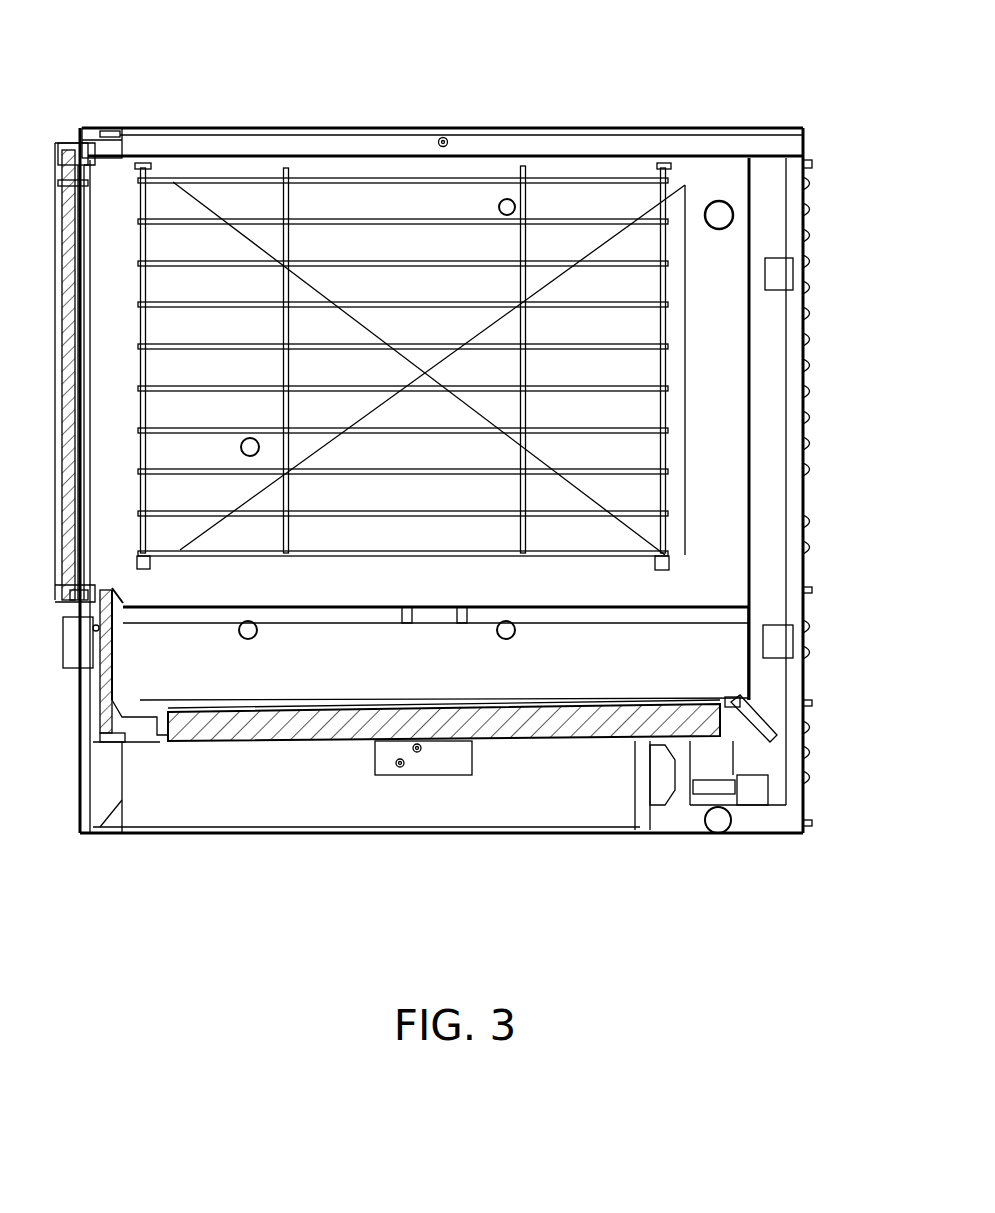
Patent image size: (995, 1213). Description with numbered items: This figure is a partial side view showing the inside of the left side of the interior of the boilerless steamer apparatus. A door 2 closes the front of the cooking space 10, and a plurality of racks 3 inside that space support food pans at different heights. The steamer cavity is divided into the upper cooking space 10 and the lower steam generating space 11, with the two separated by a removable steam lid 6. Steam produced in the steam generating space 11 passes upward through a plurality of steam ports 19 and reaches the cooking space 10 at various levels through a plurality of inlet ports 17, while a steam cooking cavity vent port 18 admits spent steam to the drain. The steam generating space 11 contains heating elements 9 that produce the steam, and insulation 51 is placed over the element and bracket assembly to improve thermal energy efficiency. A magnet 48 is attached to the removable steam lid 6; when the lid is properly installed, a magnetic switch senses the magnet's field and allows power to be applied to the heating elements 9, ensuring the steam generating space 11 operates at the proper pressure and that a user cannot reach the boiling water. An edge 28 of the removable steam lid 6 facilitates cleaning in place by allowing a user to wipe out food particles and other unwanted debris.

The door 2 is at (53, 243).
The rack 3 is at (557, 180).
The removable steam lid 6 is at (553, 617).
The heating element 9 is at (770, 740).
The cooking space 10 is at (725, 565).
The steam generating space 11 is at (717, 663).
The inlet port 17 is at (250, 437).
The steam cooking cavity vent port 18 is at (733, 210).
The steam port 19 is at (248, 640).
The edge 28 is at (118, 598).
The magnet 48 is at (432, 620).
The insulation 51 is at (200, 738).